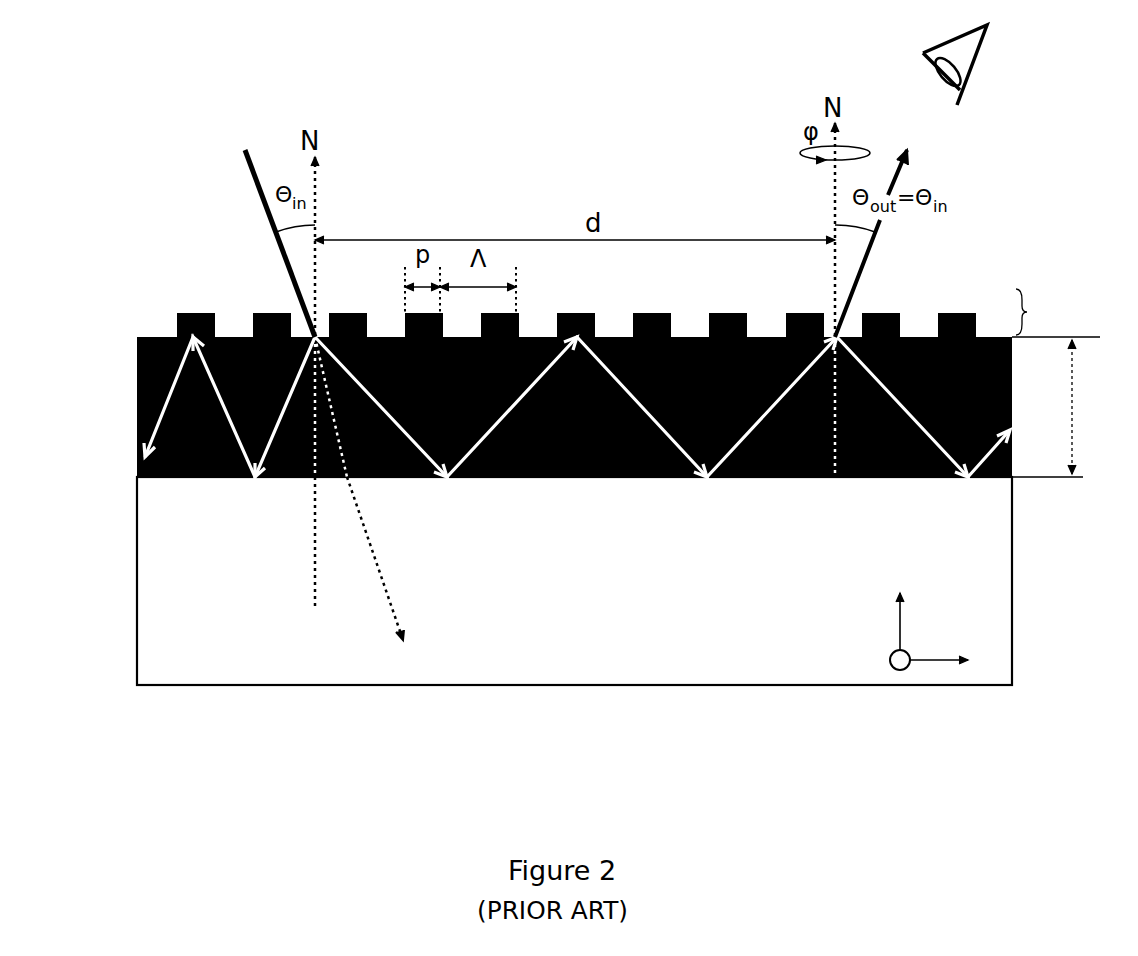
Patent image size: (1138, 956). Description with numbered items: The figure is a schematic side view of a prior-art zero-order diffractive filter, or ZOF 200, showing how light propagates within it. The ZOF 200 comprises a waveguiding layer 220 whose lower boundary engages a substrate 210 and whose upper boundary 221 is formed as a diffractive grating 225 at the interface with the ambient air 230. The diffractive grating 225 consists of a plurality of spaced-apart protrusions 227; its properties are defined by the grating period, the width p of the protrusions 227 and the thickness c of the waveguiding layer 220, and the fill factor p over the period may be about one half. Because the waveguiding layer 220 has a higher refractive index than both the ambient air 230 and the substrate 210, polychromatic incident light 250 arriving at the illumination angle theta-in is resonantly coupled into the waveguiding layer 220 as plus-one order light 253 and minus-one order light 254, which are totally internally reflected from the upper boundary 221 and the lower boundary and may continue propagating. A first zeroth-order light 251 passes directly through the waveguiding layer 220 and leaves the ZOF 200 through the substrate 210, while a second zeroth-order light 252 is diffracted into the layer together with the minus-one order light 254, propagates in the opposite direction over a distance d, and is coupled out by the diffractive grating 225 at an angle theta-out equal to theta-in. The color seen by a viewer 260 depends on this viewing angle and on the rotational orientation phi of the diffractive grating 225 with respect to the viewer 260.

The ZOF 200 is at (571, 392).
The substrate 210 is at (137, 598).
The waveguiding layer 220 is at (542, 341).
The upper boundary 221 is at (542, 272).
The diffractive grating 225 is at (1046, 312).
The protrusions 227 is at (962, 312).
The ambient air 230 is at (527, 176).
The incident light 250 is at (261, 223).
The first zeroth-order light 251 is at (415, 579).
The second zeroth-order light 252 is at (917, 223).
The +1 order light 253 is at (195, 407).
The −1 order light 254 is at (662, 407).
The viewer 260 is at (924, 64).